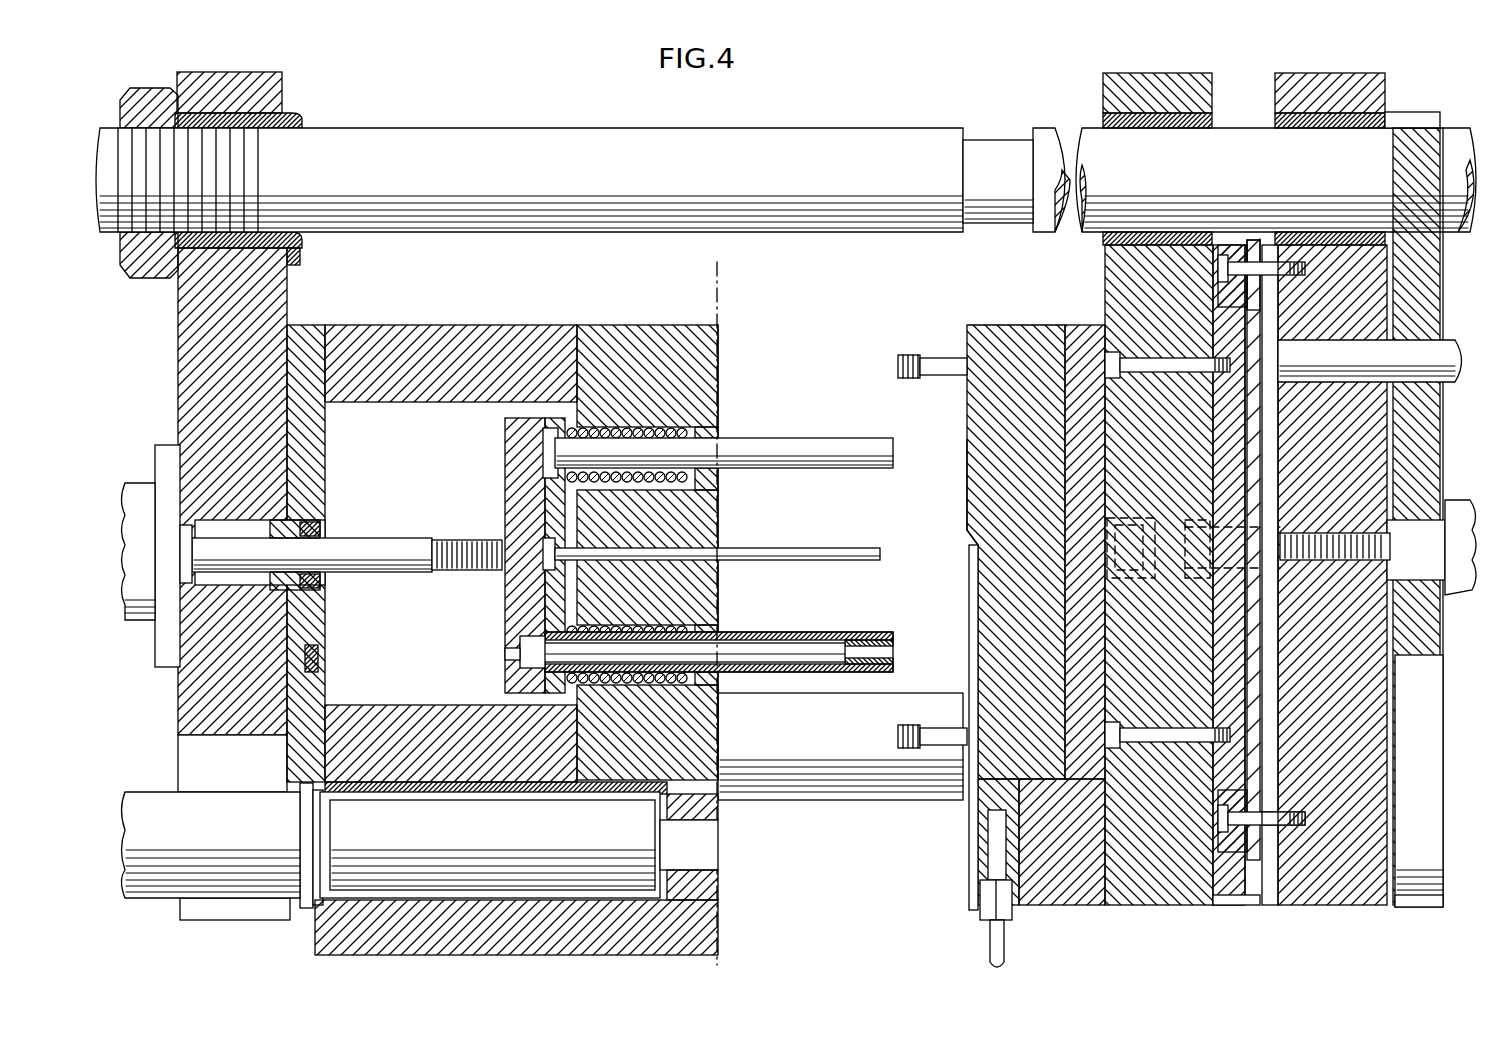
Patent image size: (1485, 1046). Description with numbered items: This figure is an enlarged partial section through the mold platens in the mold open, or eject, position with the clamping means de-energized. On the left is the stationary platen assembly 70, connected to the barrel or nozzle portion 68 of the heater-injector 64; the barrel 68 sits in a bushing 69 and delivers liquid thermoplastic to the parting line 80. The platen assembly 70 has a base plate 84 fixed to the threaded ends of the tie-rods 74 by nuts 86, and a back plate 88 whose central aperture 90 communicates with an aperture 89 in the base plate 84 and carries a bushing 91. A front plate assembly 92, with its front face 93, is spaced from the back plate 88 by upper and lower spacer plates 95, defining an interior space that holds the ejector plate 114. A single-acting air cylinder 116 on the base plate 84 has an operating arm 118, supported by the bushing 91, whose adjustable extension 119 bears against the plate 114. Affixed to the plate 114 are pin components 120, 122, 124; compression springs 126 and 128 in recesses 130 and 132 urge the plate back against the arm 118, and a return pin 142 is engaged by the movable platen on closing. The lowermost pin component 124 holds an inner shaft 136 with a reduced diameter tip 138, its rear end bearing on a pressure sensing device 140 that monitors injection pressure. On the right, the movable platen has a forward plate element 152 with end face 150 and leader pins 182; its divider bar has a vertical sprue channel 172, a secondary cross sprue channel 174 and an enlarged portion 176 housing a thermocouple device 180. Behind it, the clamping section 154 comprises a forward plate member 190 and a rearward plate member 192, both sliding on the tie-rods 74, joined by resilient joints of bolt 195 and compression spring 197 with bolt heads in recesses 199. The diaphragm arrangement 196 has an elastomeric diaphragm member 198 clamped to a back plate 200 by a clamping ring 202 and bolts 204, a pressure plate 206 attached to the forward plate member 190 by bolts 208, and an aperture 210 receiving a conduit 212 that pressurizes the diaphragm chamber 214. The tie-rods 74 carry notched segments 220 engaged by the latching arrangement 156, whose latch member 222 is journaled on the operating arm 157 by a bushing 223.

The heater-injector 64 is at (185, 870).
The nozzle portion 68 is at (360, 870).
The bushing 69 is at (712, 900).
The stationary platen assembly 70 is at (448, 325).
The tie-rods 74 is at (565, 128).
The parting line 80 is at (722, 275).
The base plate 84 is at (272, 82).
The nuts 86 is at (148, 95).
The back plate 88 is at (312, 325).
The aperture 89 is at (218, 573).
The central aperture 90 is at (318, 582).
The bushing 91 is at (305, 522).
The front plate assembly 92 is at (700, 352).
The front face 93 is at (718, 388).
The spacer plates 95 is at (458, 712).
The ejector plate 114 is at (505, 446).
The air cylinder 116 is at (130, 495).
The operating arm 118 is at (372, 540).
The adjustable extension 119 is at (462, 540).
The pin component 120 is at (828, 440).
The pin component 122 is at (815, 550).
The pin component 124 is at (782, 632).
The compression spring 126 is at (700, 430).
The compression spring 128 is at (700, 632).
The recess 130 is at (690, 485).
The recess 132 is at (700, 680).
The inner shaft 136 is at (820, 665).
The reduced diameter tip 138 is at (893, 652).
The pressure sensing device 140 is at (512, 655).
The return pin 142 is at (320, 655).
The end face 150 is at (967, 462).
The forward plate element 152 is at (1000, 325).
The clamping section 154 is at (1232, 908).
The latching arrangement 156 is at (1425, 908).
The operating arm 157 is at (1412, 530).
The vertical sprue channel 172 is at (969, 600).
The secondary cross sprue channel 174 is at (965, 540).
The enlarged portion 176 is at (983, 838).
The thermocouple device 180 is at (1012, 905).
The leader pins 182 is at (905, 352).
The forward plate member 190 is at (1125, 85).
The rearward plate member 192 is at (1290, 85).
The bolt 195 is at (1125, 525).
The diaphragm arrangement 196 is at (1255, 248).
The compression spring 197 is at (1167, 575).
The elastomeric diaphragm member 198 is at (1247, 612).
The recesses 199 is at (1107, 530).
The back plate 200 is at (1262, 730).
The clamping ring 202 is at (1222, 250).
The bolts 204 is at (1268, 828).
The pressure plate 206 is at (1213, 420).
The bolts 208 is at (1165, 358).
The aperture 210 is at (1262, 343).
The conduit 212 is at (1455, 340).
The diaphragm chamber 214 is at (1262, 665).
The notched segments 220 is at (975, 140).
The latch member 222 is at (1397, 665).
The bushing 223 is at (1407, 568).